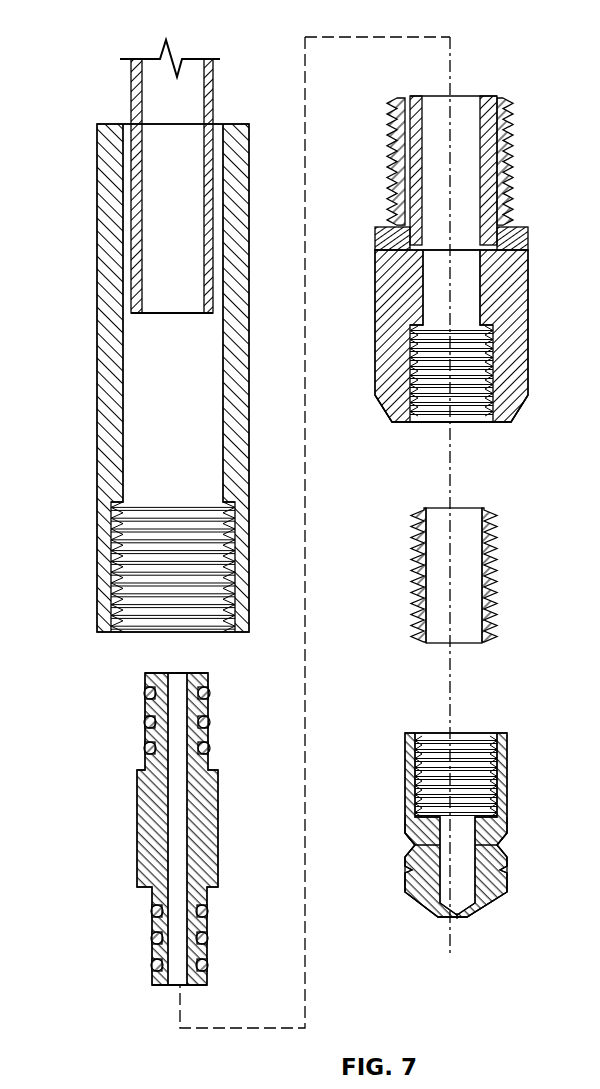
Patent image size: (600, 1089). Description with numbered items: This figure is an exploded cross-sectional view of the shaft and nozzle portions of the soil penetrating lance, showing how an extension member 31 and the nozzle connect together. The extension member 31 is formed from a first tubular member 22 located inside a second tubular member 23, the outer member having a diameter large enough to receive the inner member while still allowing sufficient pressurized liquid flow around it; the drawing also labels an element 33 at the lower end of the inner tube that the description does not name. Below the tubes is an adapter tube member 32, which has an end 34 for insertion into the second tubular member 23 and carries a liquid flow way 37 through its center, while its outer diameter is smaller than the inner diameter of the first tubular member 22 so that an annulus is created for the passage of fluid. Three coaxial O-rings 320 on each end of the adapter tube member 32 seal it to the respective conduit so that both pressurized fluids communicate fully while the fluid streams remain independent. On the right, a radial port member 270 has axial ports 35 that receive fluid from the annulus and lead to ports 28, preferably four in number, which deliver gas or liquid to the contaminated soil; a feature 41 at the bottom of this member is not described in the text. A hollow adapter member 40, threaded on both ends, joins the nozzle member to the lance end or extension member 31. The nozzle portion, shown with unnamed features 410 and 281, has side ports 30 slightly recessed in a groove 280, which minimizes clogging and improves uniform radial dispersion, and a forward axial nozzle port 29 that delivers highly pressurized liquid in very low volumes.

The extension member 31 is at (97, 348).
The first tubular member 22 is at (249, 143).
The second tubular member 23 is at (213, 95).
The bottom end of inner tube 33 is at (138, 315).
The adapter tube member 32 is at (137, 826).
The liquid flow way 37 is at (190, 652).
The end 34 is at (205, 690).
The coaxial O-rings 320 is at (208, 693).
The axial ports 35 is at (410, 97).
The ports 28 is at (377, 247).
The radial port member 270 is at (528, 318).
The chamfered lower end 41 is at (398, 422).
The adapter member 40 is at (497, 580).
The nozzle body 410 is at (405, 735).
The groove 280 is at (405, 838).
The side ports 30 is at (413, 845).
The lower sealing portion 281 is at (507, 870).
The forward or axial nozzle port 29 is at (457, 917).